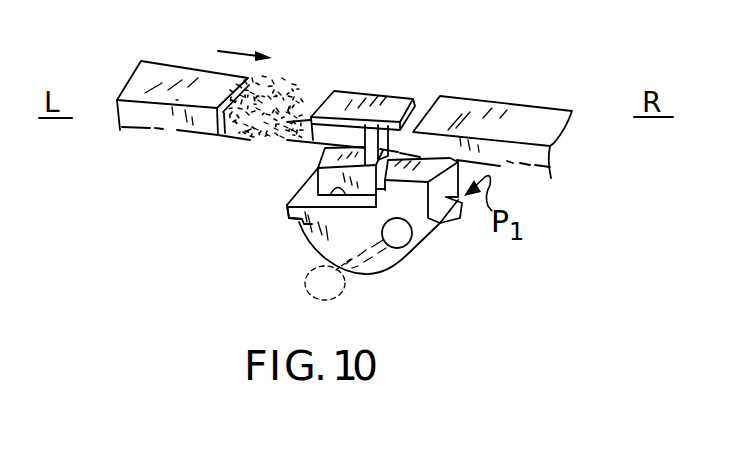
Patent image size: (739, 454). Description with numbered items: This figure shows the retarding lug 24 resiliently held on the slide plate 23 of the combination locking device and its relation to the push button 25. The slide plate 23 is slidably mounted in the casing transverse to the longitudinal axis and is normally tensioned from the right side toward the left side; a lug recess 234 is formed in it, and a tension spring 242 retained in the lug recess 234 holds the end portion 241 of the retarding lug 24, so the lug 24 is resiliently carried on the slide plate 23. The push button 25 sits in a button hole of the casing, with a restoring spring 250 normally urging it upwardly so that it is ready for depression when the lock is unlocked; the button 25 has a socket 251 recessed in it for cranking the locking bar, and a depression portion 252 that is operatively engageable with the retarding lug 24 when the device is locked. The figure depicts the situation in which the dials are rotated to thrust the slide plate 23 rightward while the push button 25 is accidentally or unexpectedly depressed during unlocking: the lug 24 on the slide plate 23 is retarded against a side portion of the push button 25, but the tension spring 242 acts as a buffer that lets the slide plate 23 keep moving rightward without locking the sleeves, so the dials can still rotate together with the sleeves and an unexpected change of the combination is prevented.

The slide plate 23 is at (485, 126).
The lug recess 234 is at (228, 95).
The retarding lug 24 is at (378, 142).
The end portion 241 is at (334, 93).
The tension spring 242 is at (289, 103).
The push button 25 is at (422, 245).
The restoring spring 250 is at (340, 298).
The socket 251 is at (289, 219).
The depression portion 252 is at (424, 187).